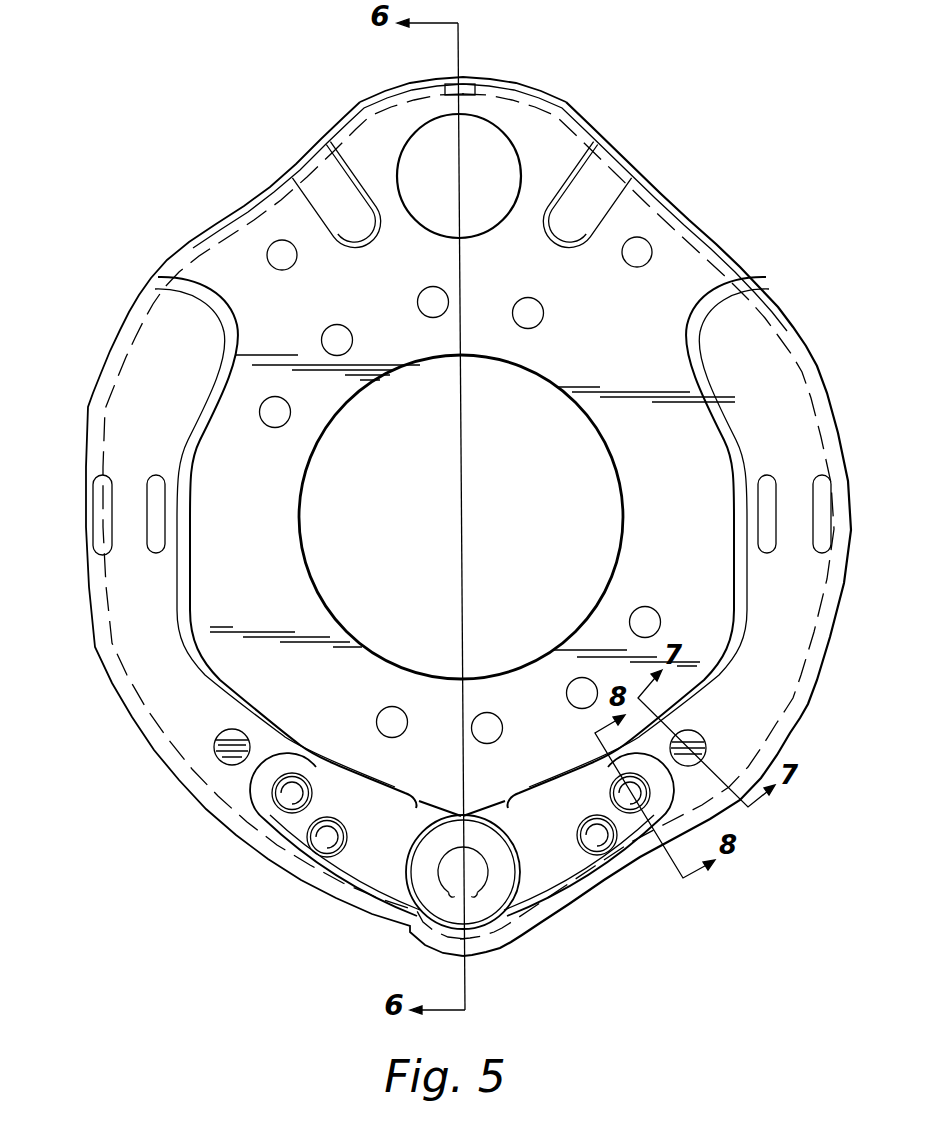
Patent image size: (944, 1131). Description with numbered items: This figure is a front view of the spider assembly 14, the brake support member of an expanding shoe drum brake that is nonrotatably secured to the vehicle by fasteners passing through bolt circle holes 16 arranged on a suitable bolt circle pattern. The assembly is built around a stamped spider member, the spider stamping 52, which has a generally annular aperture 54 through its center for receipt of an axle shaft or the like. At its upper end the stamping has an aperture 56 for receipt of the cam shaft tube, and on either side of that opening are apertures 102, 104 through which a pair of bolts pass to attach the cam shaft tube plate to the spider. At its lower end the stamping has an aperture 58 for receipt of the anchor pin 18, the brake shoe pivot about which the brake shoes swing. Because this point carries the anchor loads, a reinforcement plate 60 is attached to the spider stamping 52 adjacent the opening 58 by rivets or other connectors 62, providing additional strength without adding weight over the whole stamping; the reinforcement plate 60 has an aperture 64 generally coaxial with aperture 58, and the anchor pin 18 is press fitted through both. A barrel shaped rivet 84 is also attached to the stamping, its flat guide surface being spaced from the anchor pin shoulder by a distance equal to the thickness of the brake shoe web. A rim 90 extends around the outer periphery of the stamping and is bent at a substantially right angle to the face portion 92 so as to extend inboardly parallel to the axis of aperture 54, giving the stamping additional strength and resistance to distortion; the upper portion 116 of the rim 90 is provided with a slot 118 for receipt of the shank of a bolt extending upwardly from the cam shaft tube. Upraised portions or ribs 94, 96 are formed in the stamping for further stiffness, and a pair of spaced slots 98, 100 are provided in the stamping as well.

The spider assembly 14 is at (700, 256).
The bolt circle holes 16 is at (335, 355).
The anchor pin 18 is at (455, 913).
The spider stamping 52 is at (759, 268).
The annular aperture 54 is at (585, 412).
The aperture 56 is at (494, 131).
The aperture 58 is at (488, 892).
The reinforcement plate 60 is at (403, 822).
The rivets 62 is at (293, 787).
The aperture 64 is at (450, 895).
The barrel shaped rivet 84 is at (242, 740).
The rim 90 is at (820, 380).
The face portion 92 is at (648, 475).
The upraised portions 94 is at (175, 407).
The ribs 96 is at (327, 170).
The slot 98 is at (103, 495).
The slot 100 is at (157, 527).
The aperture 102 is at (280, 247).
The aperture 104 is at (643, 247).
The upper portion of rim 116 is at (543, 105).
The slot 118 is at (470, 79).